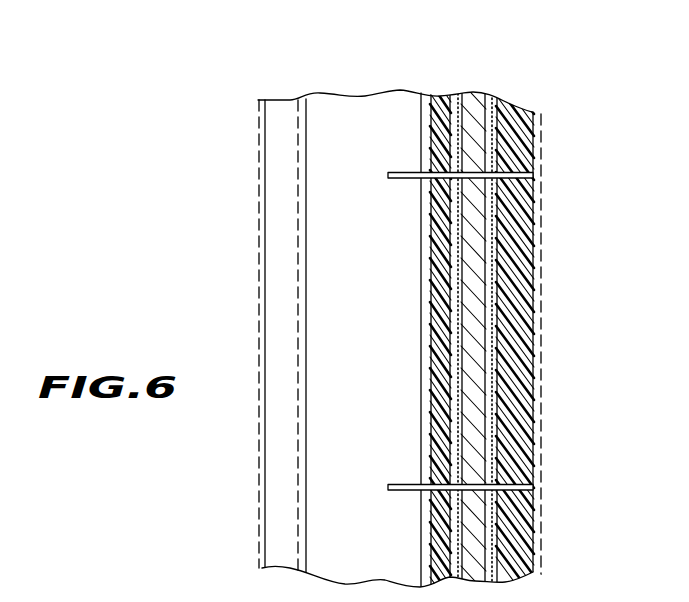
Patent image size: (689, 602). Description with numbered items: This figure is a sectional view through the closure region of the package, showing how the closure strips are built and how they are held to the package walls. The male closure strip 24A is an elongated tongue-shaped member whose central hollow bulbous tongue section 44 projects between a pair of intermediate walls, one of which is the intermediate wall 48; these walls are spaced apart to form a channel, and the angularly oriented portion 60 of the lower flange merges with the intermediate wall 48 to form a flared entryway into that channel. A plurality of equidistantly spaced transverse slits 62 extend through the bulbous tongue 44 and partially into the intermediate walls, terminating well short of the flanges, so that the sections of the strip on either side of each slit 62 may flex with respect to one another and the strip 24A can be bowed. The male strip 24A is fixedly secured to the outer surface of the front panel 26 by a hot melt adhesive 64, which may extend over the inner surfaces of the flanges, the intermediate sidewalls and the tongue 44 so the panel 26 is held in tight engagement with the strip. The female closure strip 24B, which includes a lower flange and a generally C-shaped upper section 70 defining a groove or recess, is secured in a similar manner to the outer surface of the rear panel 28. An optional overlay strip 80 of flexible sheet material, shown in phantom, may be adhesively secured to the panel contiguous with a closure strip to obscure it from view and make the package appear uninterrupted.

The male closure strip 24A is at (446, 96).
The female closure strip 24B is at (528, 106).
The front panel 26 is at (467, 408).
The rear panel 28 is at (478, 355).
The bulbous tongue section 44 is at (440, 462).
The intermediate wall 48 is at (343, 329).
The angularly oriented portion 60 is at (280, 455).
The transverse slits 62 is at (393, 180).
The hot melt adhesive 64 is at (453, 337).
The C-shaped upper section 70 is at (530, 212).
The overlay strip 80 is at (292, 184).